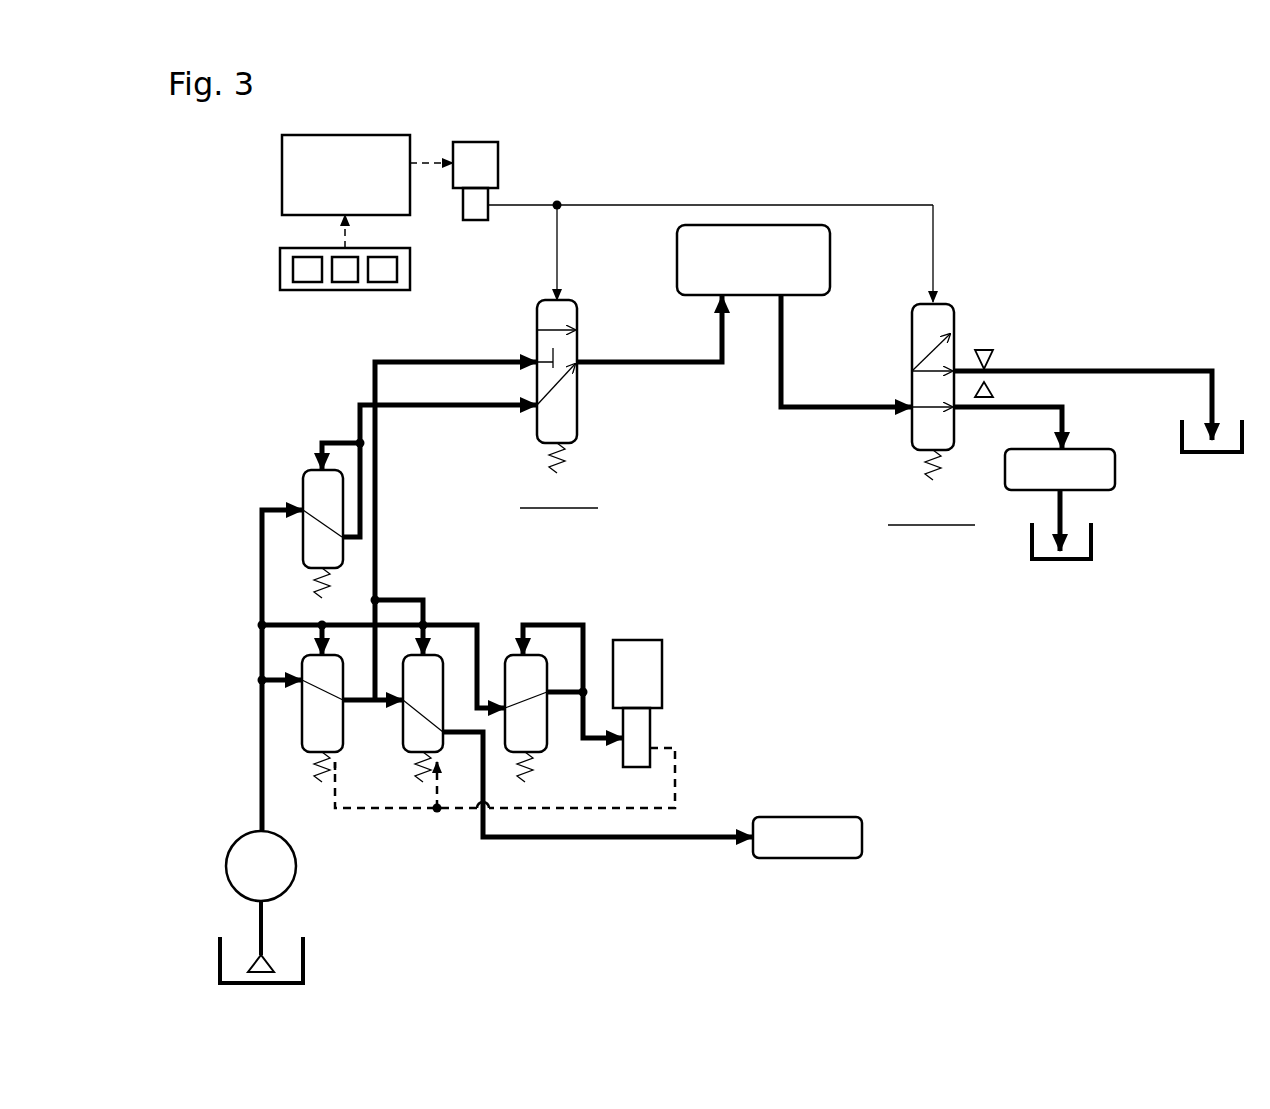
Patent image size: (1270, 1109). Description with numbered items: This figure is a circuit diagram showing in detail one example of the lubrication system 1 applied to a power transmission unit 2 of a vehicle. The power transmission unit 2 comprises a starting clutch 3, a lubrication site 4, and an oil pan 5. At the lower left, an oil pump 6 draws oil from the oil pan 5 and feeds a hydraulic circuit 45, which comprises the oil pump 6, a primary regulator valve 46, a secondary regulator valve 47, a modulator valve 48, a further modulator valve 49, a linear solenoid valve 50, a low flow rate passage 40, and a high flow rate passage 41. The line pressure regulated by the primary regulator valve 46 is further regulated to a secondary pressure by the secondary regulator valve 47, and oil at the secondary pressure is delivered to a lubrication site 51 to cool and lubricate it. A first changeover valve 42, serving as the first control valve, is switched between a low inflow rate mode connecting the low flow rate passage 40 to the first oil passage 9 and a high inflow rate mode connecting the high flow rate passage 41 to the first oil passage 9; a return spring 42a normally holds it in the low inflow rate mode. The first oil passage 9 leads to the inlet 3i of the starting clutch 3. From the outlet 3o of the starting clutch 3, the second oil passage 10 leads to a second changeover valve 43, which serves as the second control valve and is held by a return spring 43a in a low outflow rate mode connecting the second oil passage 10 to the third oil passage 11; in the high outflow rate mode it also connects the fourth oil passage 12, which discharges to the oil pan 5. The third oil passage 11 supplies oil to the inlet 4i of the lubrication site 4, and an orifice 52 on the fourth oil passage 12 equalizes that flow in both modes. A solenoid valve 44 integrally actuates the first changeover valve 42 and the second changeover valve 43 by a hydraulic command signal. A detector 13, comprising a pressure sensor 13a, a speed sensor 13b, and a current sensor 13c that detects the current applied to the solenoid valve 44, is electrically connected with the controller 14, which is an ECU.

The lubrication system 1 is at (900, 155).
The power transmission unit 2 is at (1085, 240).
The starting clutch 3 is at (677, 265).
The inlet of the starting clutch 3i is at (718, 298).
The outlet of the starting clutch 3o is at (784, 298).
The lubrication site 4 is at (1116, 470).
The inlet of the lubrication site 4i is at (1068, 446).
The oil pan 5 is at (1210, 453).
The oil pump 6 is at (297, 866).
The first oil passage 9 is at (658, 372).
The second oil passage 10 is at (822, 412).
The third oil passage 11 is at (990, 412).
The fourth oil passage 12 is at (1090, 368).
The detector 13 is at (282, 274).
The pressure sensor 13a is at (301, 283).
The speed sensor 13b is at (345, 283).
The current sensor 13c is at (383, 283).
The controller 14 is at (282, 178).
The low flow rate passage 40 is at (438, 412).
The high flow rate passage 41 is at (374, 375).
The first changeover valve 42 is at (533, 300).
The return spring 42a is at (565, 463).
The second changeover valve 43 is at (958, 292).
The return spring 43a is at (925, 464).
The solenoid valve 44 is at (478, 142).
The hydraulic circuit 45 is at (622, 590).
The primary regulator valve 46 is at (299, 752).
The secondary regulator valve 47 is at (400, 752).
The modulator valve 48 is at (298, 488).
The modulator valve 49 is at (512, 655).
The linear solenoid valve 50 is at (662, 672).
The lubrication site 51 is at (810, 817).
The orifice 52 is at (998, 362).